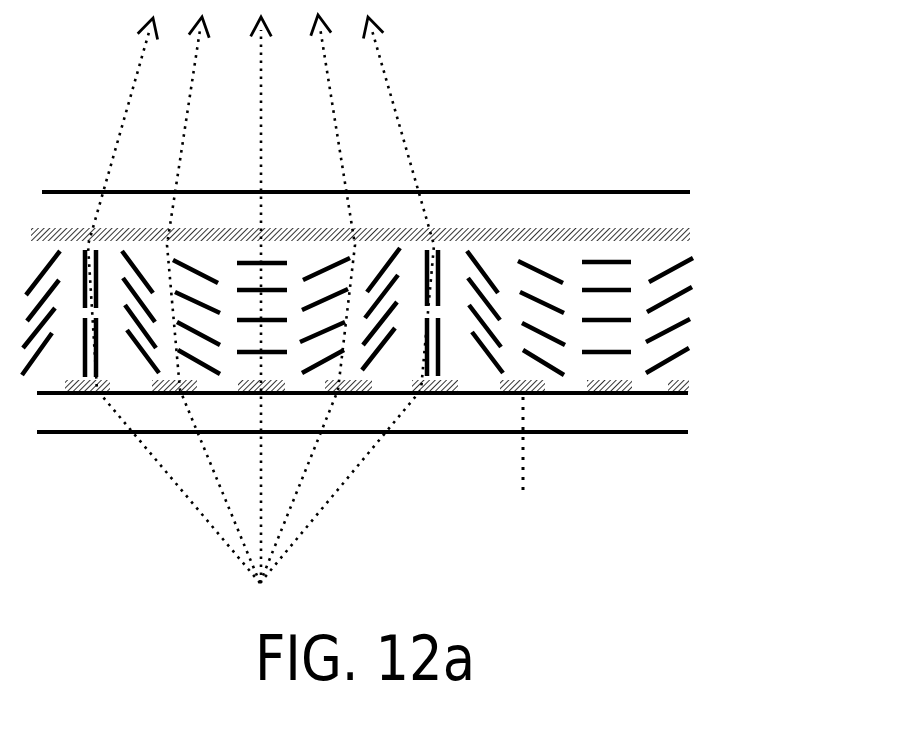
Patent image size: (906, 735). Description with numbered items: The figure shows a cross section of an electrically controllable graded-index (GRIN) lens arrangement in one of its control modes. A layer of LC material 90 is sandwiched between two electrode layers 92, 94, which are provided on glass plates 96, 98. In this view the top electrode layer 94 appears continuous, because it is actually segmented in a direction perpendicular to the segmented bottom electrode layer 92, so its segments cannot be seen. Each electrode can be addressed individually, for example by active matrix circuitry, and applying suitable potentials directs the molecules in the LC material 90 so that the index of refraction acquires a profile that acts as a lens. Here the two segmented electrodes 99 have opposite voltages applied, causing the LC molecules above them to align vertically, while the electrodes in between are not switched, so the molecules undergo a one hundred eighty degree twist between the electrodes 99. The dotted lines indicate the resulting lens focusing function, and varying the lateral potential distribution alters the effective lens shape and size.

The layer of LC material 90 is at (731, 310).
The electrode layer 92 is at (685, 387).
The electrode layer 94 is at (683, 235).
The glass plate 96 is at (673, 427).
The glass plate 98 is at (70, 182).
The segmented electrodes 99 is at (92, 426).